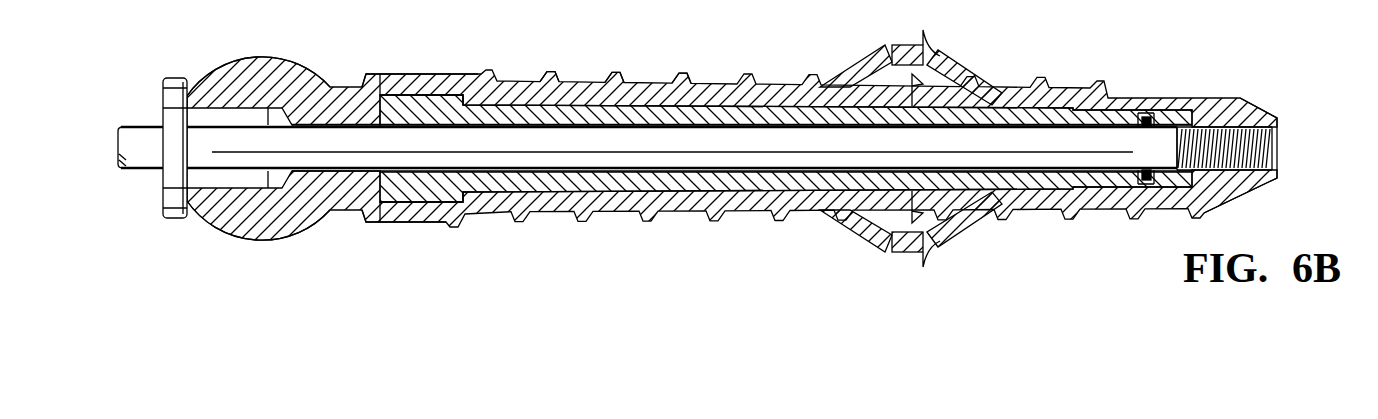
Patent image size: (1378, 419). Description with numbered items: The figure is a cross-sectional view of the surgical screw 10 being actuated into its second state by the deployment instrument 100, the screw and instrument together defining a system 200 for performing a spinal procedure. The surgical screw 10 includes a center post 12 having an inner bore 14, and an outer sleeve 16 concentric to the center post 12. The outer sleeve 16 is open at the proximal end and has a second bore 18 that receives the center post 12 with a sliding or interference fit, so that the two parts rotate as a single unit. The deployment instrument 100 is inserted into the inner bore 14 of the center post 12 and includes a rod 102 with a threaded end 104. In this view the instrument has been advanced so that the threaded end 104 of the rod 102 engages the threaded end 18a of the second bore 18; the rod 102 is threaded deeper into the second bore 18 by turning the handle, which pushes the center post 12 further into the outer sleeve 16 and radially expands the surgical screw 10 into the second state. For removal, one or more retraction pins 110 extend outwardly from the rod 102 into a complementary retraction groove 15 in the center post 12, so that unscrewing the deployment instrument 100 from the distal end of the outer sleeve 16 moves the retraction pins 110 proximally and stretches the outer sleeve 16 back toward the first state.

The surgical screw 10 is at (578, 51).
The center post 12 is at (319, 69).
The inner bore 14 is at (403, 124).
The outer sleeve 16 is at (644, 81).
The second bore 18 is at (1058, 110).
The threaded end of the second bore 18a is at (1278, 153).
The deployment instrument 100 is at (137, 119).
The rod 102 is at (780, 138).
The threaded end 104 is at (1247, 120).
The retraction pins 110 is at (1152, 122).
The retraction groove 15 is at (1145, 113).
The system 200 is at (157, 66).